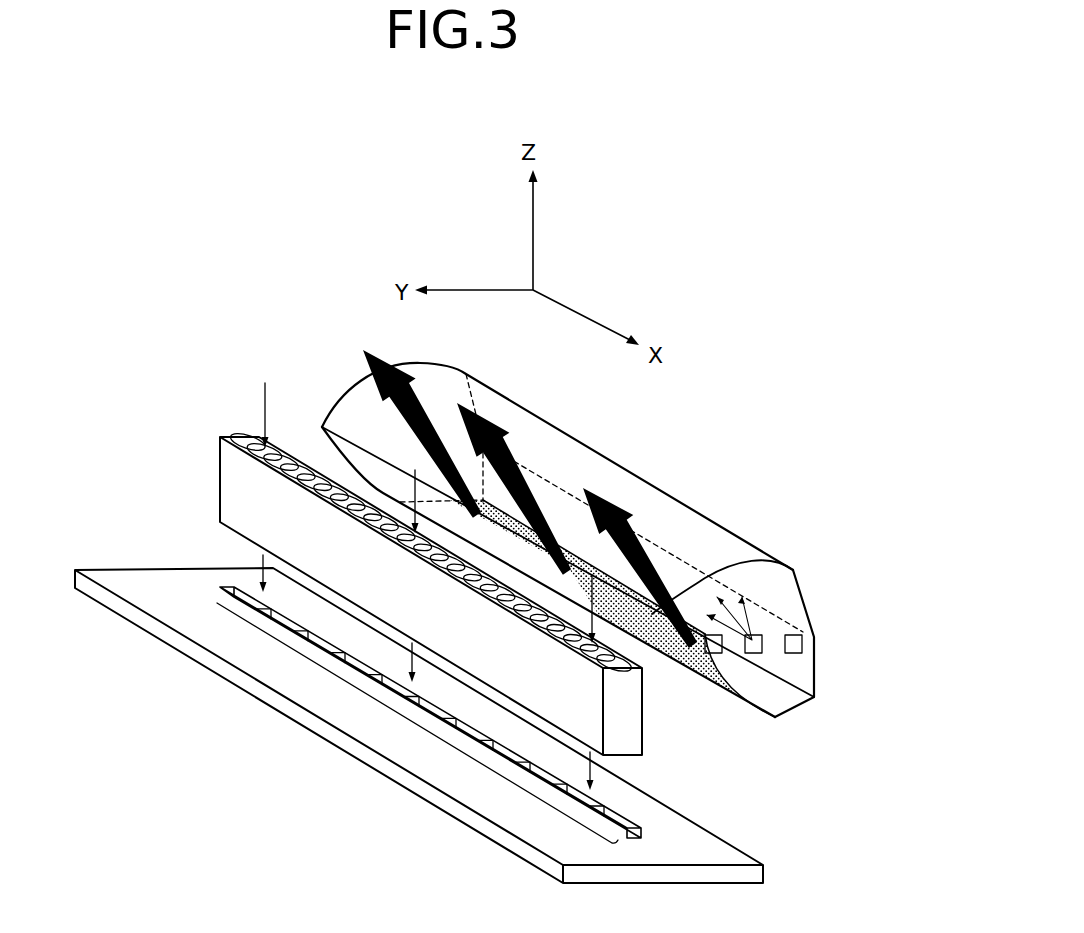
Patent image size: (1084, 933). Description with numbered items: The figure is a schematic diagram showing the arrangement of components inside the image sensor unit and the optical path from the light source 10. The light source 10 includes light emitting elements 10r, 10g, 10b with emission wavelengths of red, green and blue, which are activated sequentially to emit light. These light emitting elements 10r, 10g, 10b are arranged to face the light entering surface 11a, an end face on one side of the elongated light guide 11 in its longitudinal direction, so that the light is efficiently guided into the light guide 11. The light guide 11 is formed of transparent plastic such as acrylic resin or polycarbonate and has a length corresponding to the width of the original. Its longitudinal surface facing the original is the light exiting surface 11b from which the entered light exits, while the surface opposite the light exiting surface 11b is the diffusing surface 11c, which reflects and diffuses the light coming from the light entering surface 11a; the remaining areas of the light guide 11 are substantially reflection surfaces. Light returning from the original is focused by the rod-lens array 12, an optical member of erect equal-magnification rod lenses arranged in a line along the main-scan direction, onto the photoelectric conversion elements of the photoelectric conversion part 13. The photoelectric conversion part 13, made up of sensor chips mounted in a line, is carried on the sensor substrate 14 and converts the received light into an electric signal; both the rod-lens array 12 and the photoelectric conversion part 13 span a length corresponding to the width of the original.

The light source 10 is at (820, 668).
The light emitting element 10b is at (802, 647).
The light emitting element 10g is at (762, 648).
The light emitting element 10r is at (762, 652).
The light guide 11 is at (614, 576).
The light entering surface 11a is at (787, 600).
The light exiting surface 11b is at (727, 545).
The diffusing surface 11c is at (790, 703).
The rod-lens array 12 is at (228, 486).
The photoelectric conversion part 13 is at (407, 714).
The sensor substrate 14 is at (728, 847).